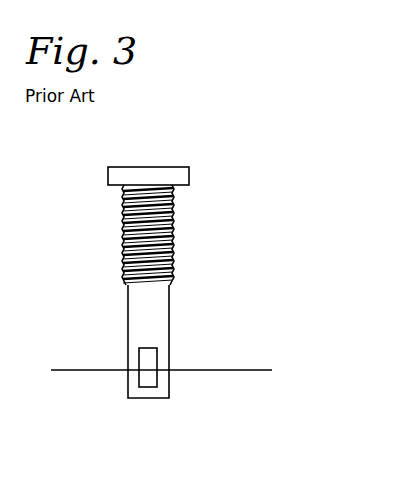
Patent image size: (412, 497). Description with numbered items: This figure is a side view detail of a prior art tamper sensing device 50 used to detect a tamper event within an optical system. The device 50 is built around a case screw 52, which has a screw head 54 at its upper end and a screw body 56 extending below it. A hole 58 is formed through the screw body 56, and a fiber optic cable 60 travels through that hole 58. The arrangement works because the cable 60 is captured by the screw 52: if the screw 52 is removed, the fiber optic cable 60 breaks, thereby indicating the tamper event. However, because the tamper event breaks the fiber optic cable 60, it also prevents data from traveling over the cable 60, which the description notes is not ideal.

The tamper sensing device 50 is at (282, 175).
The case screw 52 is at (174, 237).
The screw head 54 is at (175, 167).
The screw body 56 is at (169, 310).
The hole 58 is at (147, 360).
The fiber optic cable 60 is at (252, 370).